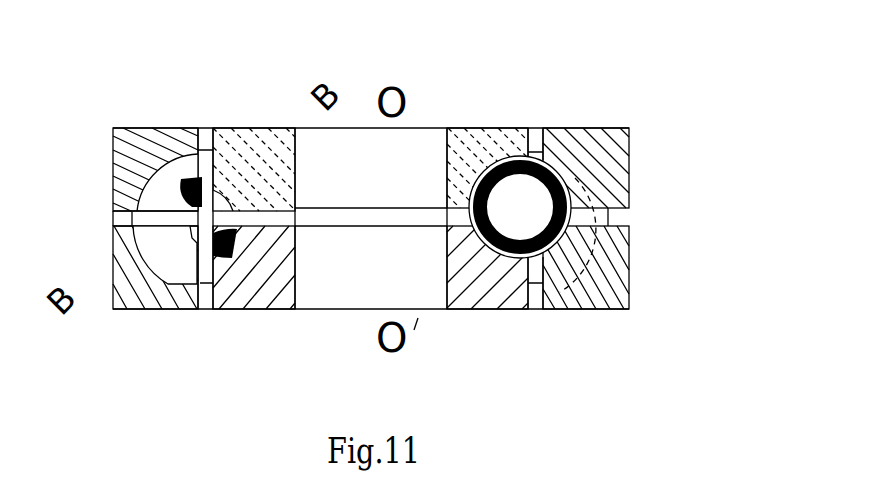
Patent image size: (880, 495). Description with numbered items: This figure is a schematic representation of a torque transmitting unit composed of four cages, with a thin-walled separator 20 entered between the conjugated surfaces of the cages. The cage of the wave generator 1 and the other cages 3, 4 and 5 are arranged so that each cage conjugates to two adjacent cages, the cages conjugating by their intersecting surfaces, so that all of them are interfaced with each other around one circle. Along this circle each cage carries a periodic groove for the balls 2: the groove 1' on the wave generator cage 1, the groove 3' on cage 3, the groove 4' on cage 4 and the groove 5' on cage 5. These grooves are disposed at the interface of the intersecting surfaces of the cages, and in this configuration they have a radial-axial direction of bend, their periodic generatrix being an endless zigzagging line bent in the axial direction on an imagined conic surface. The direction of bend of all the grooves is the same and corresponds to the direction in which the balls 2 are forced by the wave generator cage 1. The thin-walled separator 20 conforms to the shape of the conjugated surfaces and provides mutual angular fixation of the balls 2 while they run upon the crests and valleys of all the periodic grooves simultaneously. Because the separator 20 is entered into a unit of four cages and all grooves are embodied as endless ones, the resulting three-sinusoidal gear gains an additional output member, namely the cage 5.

The cage of the wave generator 1 is at (281, 115).
The periodic groove of cage 1 1' is at (467, 115).
The balls 2 is at (550, 165).
The cage of the transmitting unit 3 is at (500, 308).
The periodic groove of cage 3 3' is at (231, 308).
The cage of the transmitting unit 4 is at (653, 141).
The periodic groove of cage 4 4' is at (161, 117).
The cage of the transmitting unit 5 is at (649, 243).
The periodic groove of cage 5 5' is at (132, 308).
The thin-walled separator 20 is at (117, 218).